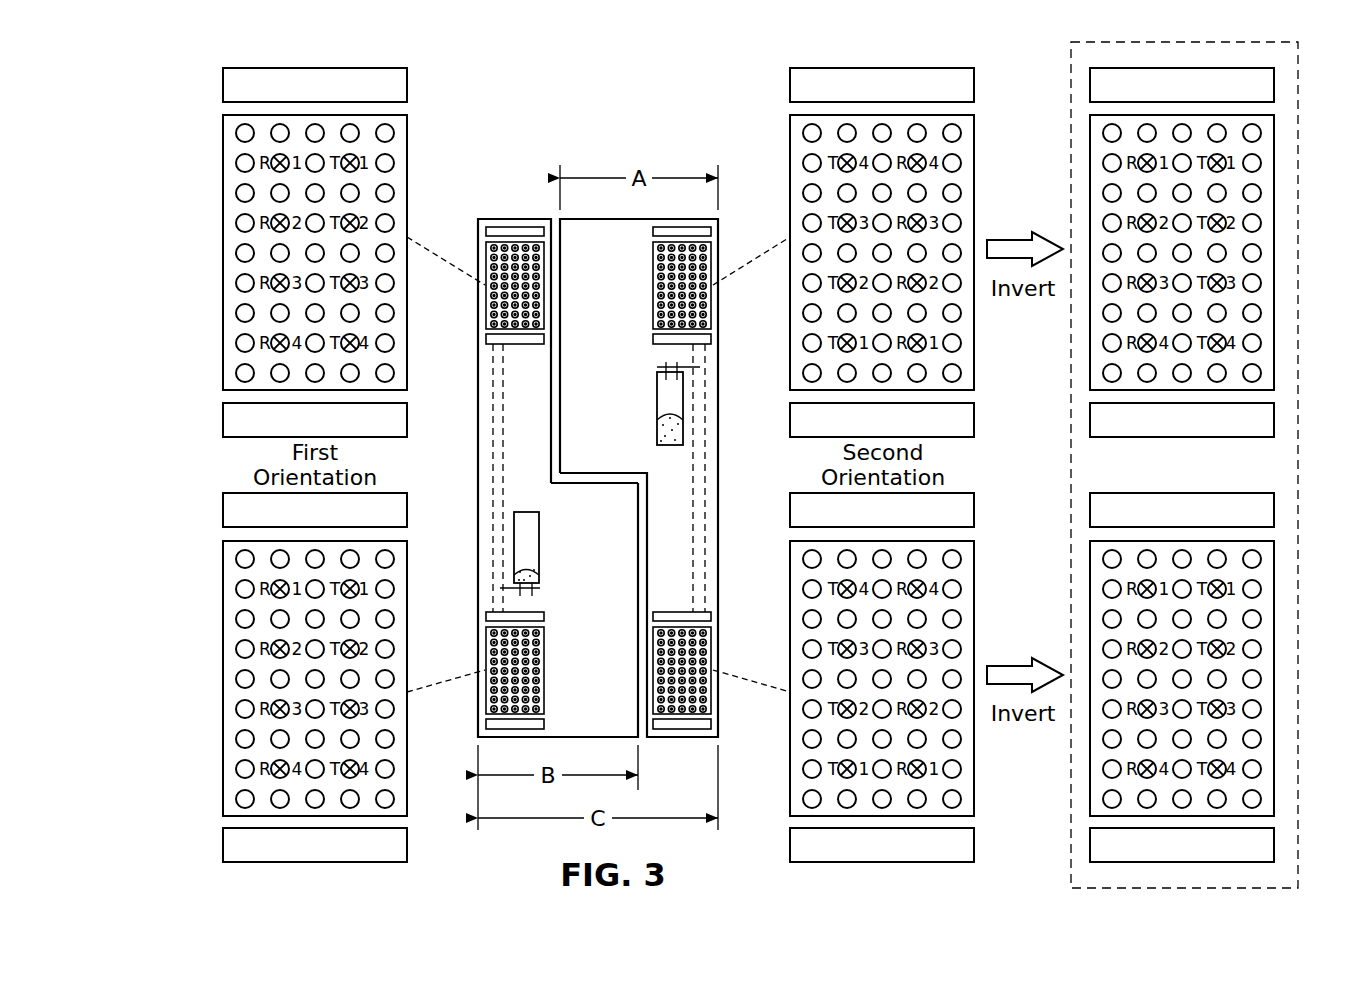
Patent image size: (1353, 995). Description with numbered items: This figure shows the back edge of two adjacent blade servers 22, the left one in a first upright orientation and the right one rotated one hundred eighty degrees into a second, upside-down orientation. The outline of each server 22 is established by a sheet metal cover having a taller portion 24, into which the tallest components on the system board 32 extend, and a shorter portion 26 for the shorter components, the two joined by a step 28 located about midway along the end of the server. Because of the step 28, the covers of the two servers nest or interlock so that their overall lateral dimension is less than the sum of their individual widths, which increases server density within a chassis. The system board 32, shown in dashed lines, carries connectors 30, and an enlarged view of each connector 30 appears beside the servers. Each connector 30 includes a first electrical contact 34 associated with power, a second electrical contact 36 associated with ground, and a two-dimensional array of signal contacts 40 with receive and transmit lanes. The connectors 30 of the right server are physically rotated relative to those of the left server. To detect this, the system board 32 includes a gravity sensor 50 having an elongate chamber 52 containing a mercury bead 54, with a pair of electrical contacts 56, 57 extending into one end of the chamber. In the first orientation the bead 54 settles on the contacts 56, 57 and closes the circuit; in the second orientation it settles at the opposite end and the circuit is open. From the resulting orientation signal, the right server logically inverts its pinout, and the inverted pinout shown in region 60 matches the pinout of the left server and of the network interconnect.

The blade server 22 is at (600, 478).
The taller portion of the cover 24 is at (603, 274).
The shorter portion of the cover 26 is at (519, 429).
The step 28 is at (598, 473).
The connector 30 is at (739, 464).
The system board 32 is at (493, 378).
The first electrical contact 34 is at (322, 67).
The second electrical contact 36 is at (375, 437).
The array of signal contacts 40 is at (223, 203).
The gravity sensor 50 is at (600, 471).
The elongate chamber 52 is at (657, 405).
The mercury bead 54 is at (680, 428).
The electrical contact 56 is at (495, 588).
The electrical contact 57 is at (660, 366).
The region showing inverted pinout 60 is at (1071, 90).